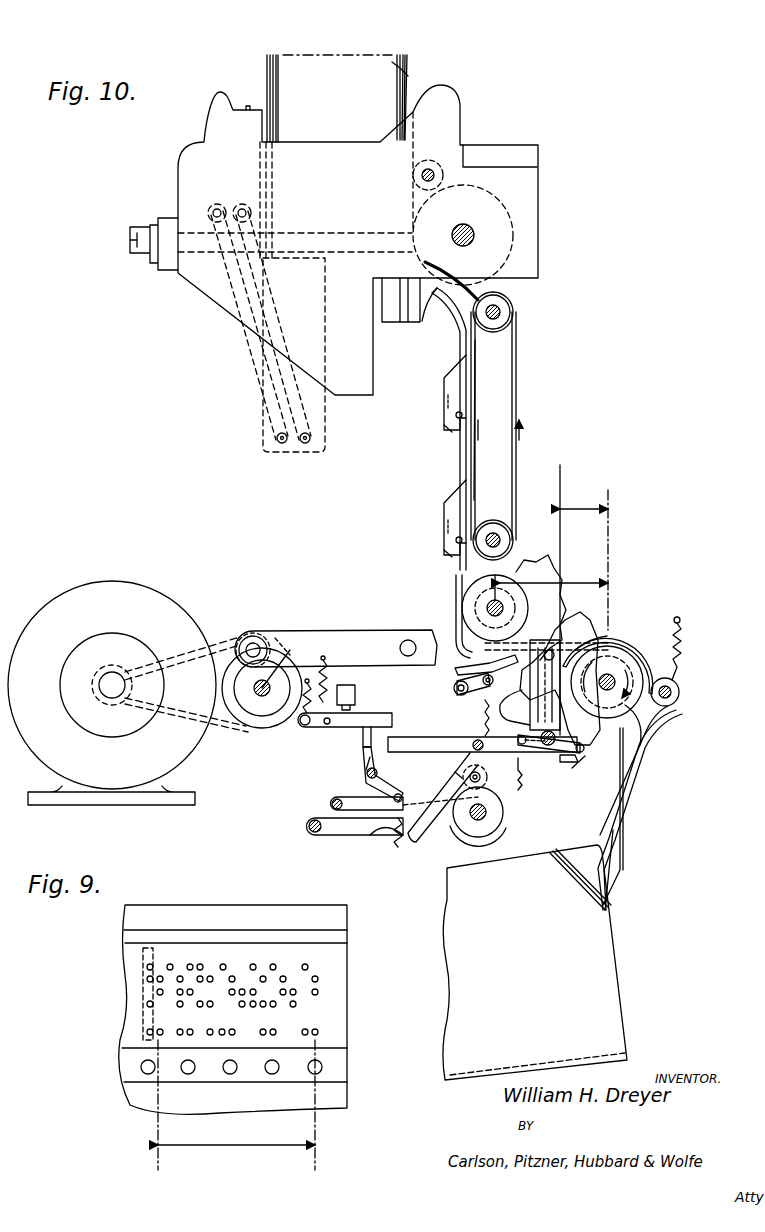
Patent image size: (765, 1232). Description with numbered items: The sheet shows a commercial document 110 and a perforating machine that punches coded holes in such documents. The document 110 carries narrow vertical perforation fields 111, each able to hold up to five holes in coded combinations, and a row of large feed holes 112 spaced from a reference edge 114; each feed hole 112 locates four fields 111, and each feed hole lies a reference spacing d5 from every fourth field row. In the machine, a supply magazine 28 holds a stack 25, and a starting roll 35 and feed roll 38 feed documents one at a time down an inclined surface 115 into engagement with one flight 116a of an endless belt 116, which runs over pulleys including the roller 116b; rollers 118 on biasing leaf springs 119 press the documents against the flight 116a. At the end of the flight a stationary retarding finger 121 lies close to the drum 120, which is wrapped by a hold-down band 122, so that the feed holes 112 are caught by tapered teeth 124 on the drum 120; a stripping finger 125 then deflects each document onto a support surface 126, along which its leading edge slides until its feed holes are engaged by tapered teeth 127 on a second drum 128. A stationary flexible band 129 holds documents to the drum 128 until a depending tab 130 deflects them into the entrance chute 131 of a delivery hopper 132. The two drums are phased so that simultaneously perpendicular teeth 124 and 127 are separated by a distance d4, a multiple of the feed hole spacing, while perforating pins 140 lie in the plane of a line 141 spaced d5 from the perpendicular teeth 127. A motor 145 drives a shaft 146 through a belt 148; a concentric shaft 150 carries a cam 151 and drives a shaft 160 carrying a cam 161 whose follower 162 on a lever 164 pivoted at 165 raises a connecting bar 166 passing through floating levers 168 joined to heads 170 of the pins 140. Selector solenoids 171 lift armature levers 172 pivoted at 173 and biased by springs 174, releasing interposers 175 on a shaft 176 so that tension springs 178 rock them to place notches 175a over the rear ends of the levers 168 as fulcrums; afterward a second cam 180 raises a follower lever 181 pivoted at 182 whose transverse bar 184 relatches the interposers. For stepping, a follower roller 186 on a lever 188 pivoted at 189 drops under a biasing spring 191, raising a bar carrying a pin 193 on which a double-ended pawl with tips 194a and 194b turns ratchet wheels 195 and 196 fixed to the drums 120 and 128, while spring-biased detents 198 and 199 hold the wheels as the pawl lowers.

In FIG. 10, the stack 25 is at (328, 57).
In FIG. 10, the supply magazine 28 is at (412, 67).
In FIG. 10, the starting roll 35 is at (436, 162).
In FIG. 10, the feed roll 38 is at (474, 235).
In FIG. 10, the inclined surface 115 is at (424, 424).
In FIG. 10, the endless belt 116 is at (520, 366).
In FIG. 10, the belt flight 116a is at (478, 342).
In FIG. 10, the upper belt roller 116b is at (500, 312).
In FIG. 10, the rollers 118 is at (452, 432).
In FIG. 10, the biasing leaf springs 119 is at (456, 370).
In FIG. 10, the drum 120 is at (466, 588).
In FIG. 10, the stationary retarding finger 121 is at (458, 577).
In FIG. 10, the hold-down band 122 is at (470, 612).
In FIG. 10, the tapered teeth 124 is at (508, 550).
In FIG. 10, the stripping finger 125 is at (480, 640).
In FIG. 10, the support surface 126 is at (476, 666).
In FIG. 10, the tapered teeth 127 is at (612, 640).
In FIG. 10, the second drum 128 is at (625, 650).
In FIG. 10, the flexible band 129 is at (680, 685).
In FIG. 10, the depending tab 130 is at (672, 712).
In FIG. 10, the entrance chute 131 is at (640, 770).
In FIG. 10, the delivery hopper 132 is at (568, 962).
In FIG. 10, the perforating pins 140 is at (607, 682).
In FIG. 10, the line 141 is at (561, 478).
In FIG. 10, the motor 145 is at (125, 590).
In FIG. 10, the shaft 146 is at (278, 718).
In FIG. 10, the belt 148 is at (246, 636).
In FIG. 10, the shaft 150 is at (300, 651).
In FIG. 10, the cam 151 is at (258, 705).
In FIG. 10, the shaft 160 is at (486, 813).
In FIG. 10, the cam 161 is at (488, 782).
In FIG. 10, the follower 162 is at (524, 775).
In FIG. 10, the lever 164 is at (336, 838).
In FIG. 10, the pivot 165 is at (306, 826).
In FIG. 10, the connecting bar 166 is at (474, 746).
In FIG. 10, the die-actuating floating levers 168 is at (435, 752).
In FIG. 10, the heads 170 is at (537, 755).
In FIG. 10, the selector solenoids 171 is at (356, 690).
In FIG. 10, the armature levers 172 is at (358, 725).
In FIG. 10, the pivot 173 is at (339, 722).
In FIG. 10, the springs 174 is at (307, 725).
In FIG. 10, the interposers 175 is at (364, 770).
In FIG. 10, the notches 175a is at (368, 758).
In FIG. 10, the shaft 176 is at (367, 777).
In FIG. 10, the tension springs 178 is at (385, 812).
In FIG. 10, the second cam 180 is at (462, 838).
In FIG. 10, the follower lever 181 is at (380, 838).
In FIG. 10, the pivot 182 is at (330, 803).
In FIG. 10, the transverse bar 184 is at (398, 794).
In FIG. 10, the follower roller 186 is at (276, 630).
In FIG. 10, the lever 188 is at (345, 632).
In FIG. 10, the pivot 189 is at (408, 658).
In FIG. 10, the biasing spring 191 is at (329, 660).
In FIG. 10, the pin 193 is at (527, 676).
In FIG. 10, the pawl tip 194a is at (566, 620).
In FIG. 10, the pawl tip 194b is at (520, 712).
In FIG. 10, the ratchet wheel 195 is at (548, 562).
In FIG. 10, the ratchet wheel 196 is at (598, 742).
In FIG. 10, the spring-biased detent 198 is at (472, 704).
In FIG. 10, the spring-biased detent 199 is at (568, 765).
In FIG. 9, the commercial document 110 is at (212, 898).
In FIG. 9, the vertical perforation fields 111 is at (143, 968).
In FIG. 9, the feed holes 112 is at (190, 1068).
In FIG. 9, the reference edge 114 is at (332, 958).
In FIG. 10, the distance d4 is at (554, 584).
In FIG. 10, the distance d5 is at (584, 505).
In FIG. 9, the distance d5 is at (300, 1148).